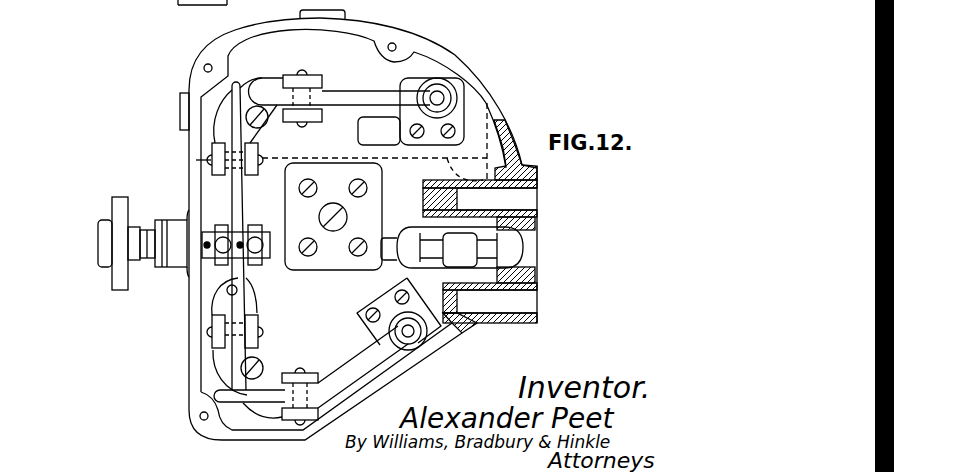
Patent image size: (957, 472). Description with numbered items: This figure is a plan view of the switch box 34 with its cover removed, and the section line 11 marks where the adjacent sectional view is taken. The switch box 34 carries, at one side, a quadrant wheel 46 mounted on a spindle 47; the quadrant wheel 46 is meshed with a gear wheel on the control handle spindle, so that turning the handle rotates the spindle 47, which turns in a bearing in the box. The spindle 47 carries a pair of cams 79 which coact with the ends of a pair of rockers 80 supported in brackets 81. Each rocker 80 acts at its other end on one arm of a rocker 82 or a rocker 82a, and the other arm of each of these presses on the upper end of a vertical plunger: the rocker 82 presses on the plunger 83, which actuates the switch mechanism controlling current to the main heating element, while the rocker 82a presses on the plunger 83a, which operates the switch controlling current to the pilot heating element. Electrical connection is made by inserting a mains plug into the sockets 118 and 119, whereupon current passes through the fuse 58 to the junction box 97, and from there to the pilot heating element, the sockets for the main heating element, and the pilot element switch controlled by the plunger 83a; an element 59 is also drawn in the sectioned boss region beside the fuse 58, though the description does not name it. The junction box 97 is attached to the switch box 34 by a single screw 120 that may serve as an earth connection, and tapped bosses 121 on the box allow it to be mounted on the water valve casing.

The section line 11 is at (97, 242).
The switch box 34 is at (363, 30).
The quadrant wheel 46 is at (116, 203).
The spindle 47 is at (147, 250).
The fuse 58 is at (476, 330).
The valve member 59 is at (388, 237).
The cams 79 is at (252, 230).
The rockers 80 is at (233, 192).
The brackets 81 is at (218, 122).
The rocker 82 is at (343, 95).
The rocker 82a is at (365, 376).
The plunger 83 is at (447, 90).
The plunger 83a is at (417, 343).
The junction box 97 is at (342, 258).
The socket 118 is at (527, 200).
The socket 119 is at (527, 302).
The screw 120 is at (333, 228).
The tapped bosses 121 is at (181, 0).